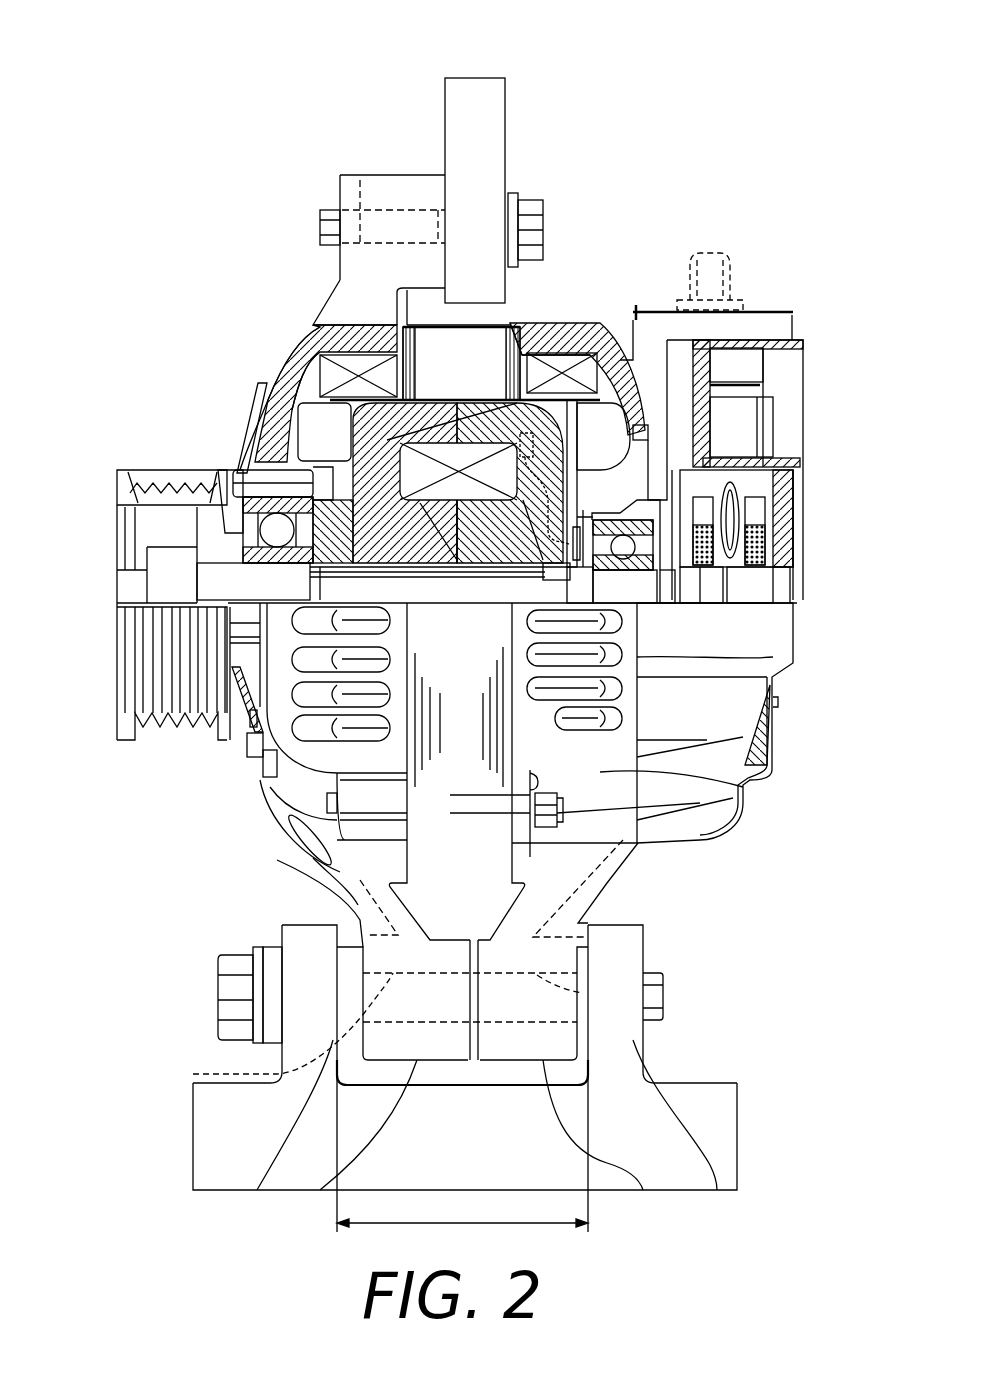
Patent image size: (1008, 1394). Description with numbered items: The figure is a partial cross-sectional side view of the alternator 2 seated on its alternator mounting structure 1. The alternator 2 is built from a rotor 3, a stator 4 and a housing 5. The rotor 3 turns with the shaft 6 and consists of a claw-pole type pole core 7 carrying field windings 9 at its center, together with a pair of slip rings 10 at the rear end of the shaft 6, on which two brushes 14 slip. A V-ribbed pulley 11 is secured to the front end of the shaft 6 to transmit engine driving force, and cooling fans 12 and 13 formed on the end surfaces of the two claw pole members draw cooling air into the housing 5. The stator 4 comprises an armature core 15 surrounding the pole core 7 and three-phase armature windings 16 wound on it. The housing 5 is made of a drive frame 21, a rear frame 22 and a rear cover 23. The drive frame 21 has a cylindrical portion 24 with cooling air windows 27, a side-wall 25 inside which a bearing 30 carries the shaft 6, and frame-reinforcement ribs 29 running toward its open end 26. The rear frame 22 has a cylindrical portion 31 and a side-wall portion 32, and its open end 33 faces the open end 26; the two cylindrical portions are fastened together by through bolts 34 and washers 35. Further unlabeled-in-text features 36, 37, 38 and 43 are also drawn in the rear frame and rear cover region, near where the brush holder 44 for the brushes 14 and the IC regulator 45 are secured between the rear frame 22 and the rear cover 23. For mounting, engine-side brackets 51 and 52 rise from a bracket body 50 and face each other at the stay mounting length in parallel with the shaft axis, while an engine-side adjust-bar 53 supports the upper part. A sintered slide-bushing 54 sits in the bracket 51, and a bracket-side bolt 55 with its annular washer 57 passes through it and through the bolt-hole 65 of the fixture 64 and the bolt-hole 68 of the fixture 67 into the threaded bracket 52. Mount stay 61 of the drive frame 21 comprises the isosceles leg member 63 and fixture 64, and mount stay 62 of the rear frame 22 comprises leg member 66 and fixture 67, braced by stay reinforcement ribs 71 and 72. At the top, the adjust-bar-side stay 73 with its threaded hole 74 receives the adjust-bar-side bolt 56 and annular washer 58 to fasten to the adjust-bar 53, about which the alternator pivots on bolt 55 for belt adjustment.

The alternator mounting structure 1 is at (527, 68).
The alternator 2 is at (762, 162).
The rotor 3 is at (613, 483).
The stator 4 is at (253, 423).
The housing 5 is at (273, 360).
The shaft 6 is at (213, 592).
The pole core 7 is at (330, 463).
The field windings 9 is at (627, 360).
The slip rings 10 is at (763, 593).
The V-ribbed pulley 11 is at (173, 727).
The cooling fan 12 is at (336, 445).
The cooling fan 13 is at (609, 448).
The brushes 14 is at (770, 540).
The armature core 15 is at (476, 385).
The three-phase armature windings 16 is at (307, 352).
The drive frame 21 is at (313, 327).
The rear frame 22 is at (583, 333).
The rear cover 23 is at (757, 347).
The cylindrical portion 24 is at (358, 327).
The side-wall 25 is at (268, 400).
The open end 26 is at (397, 288).
The cooling air windows 27 is at (380, 628).
The frame-reinforcement ribs 29 is at (300, 783).
The bearing 30 is at (230, 483).
The cylindrical portion 31 is at (560, 327).
The side-wall portion 32 is at (640, 360).
The open end 33 is at (520, 323).
The through bolts 34 is at (690, 840).
The washers 35 is at (743, 787).
The ventilation windows 36 is at (525, 623).
The brush holder 37 is at (640, 445).
The rear cover portion 38 is at (657, 607).
The brush 43 is at (793, 527).
The brush holder 44 is at (793, 497).
The IC regulator 45 is at (737, 373).
The bracket body 50 is at (476, 1166).
The engine-side bracket 51 is at (283, 1047).
The engine-side bracket 52 is at (620, 1025).
The engine-side adjust-bar 53 is at (480, 132).
The slide-bushing 54 is at (267, 950).
The bracket-side bolt 55 is at (233, 997).
The adjust-bar-side bolt 56 is at (530, 197).
The annular washer 57 is at (260, 957).
The annular washer 58 is at (510, 193).
The mount stay 61 is at (320, 1190).
The mount stay 62 is at (643, 1190).
The leg member 63 is at (397, 907).
The fixture 64 is at (257, 1190).
The bolt-hole 65 is at (193, 1074).
The leg member 66 is at (517, 900).
The fixture 67 is at (717, 1190).
The bolt-hole 68 is at (665, 995).
The stay reinforcement ribs 71 is at (340, 897).
The stay-reinforcement ribs 72 is at (580, 893).
The adjust-bar-side stay 73 is at (428, 175).
The threaded hole 74 is at (360, 175).